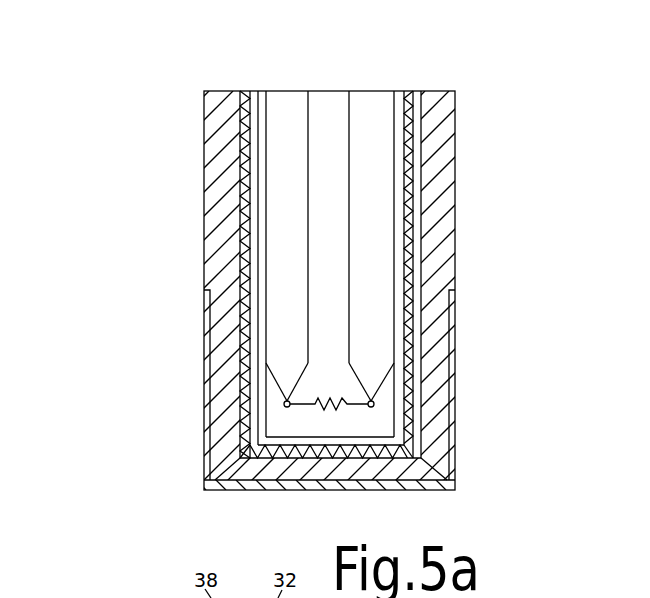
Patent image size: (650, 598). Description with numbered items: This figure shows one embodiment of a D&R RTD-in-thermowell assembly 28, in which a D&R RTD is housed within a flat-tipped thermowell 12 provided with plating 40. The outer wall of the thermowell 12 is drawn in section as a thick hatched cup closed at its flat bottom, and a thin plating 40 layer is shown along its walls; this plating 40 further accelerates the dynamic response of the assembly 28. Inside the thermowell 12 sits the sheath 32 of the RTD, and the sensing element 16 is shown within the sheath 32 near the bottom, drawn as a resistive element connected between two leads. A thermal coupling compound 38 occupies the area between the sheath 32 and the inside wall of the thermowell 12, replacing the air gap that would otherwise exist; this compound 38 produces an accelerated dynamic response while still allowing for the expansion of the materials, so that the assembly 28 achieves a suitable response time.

The D&R RTD-in-thermowell assembly 28 is at (325, 260).
The thermowell 12 is at (214, 229).
The plating 40 is at (211, 330).
The thermal coupling compound 38 is at (240, 90).
The sheath 32 is at (255, 90).
The sensing element 16 is at (352, 411).